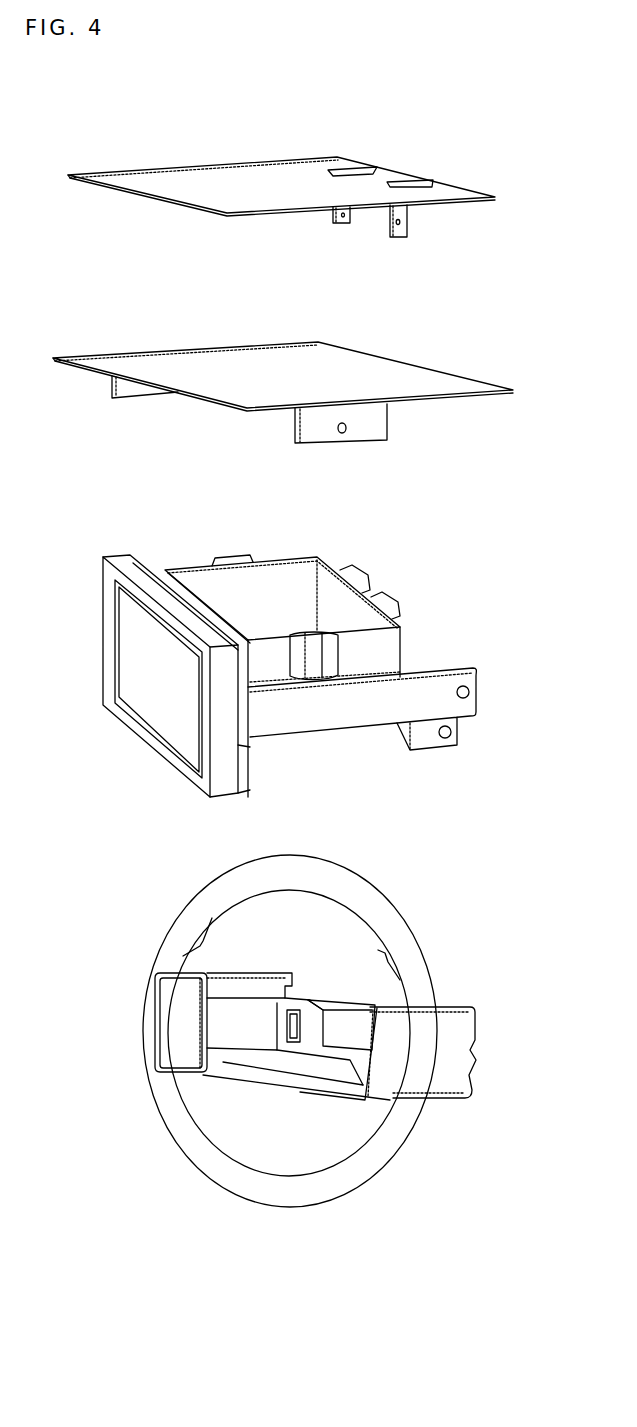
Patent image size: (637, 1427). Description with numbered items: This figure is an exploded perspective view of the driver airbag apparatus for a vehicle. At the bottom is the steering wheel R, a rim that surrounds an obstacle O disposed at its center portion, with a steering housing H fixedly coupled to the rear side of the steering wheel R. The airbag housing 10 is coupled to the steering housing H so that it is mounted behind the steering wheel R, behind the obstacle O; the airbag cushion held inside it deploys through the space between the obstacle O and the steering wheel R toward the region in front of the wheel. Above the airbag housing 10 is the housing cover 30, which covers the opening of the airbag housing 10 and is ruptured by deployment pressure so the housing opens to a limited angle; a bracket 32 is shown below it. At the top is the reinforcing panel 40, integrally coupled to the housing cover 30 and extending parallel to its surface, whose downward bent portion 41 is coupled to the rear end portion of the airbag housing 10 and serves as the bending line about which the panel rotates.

The reinforcing panel 40 is at (226, 177).
The bent portion 41 is at (396, 228).
The housing cover 30 is at (428, 378).
The mounting bracket 32 is at (375, 428).
The obstacle O is at (133, 653).
The airbag housing 10 is at (402, 637).
The steering wheel R is at (258, 1187).
The steering housing H is at (348, 1027).